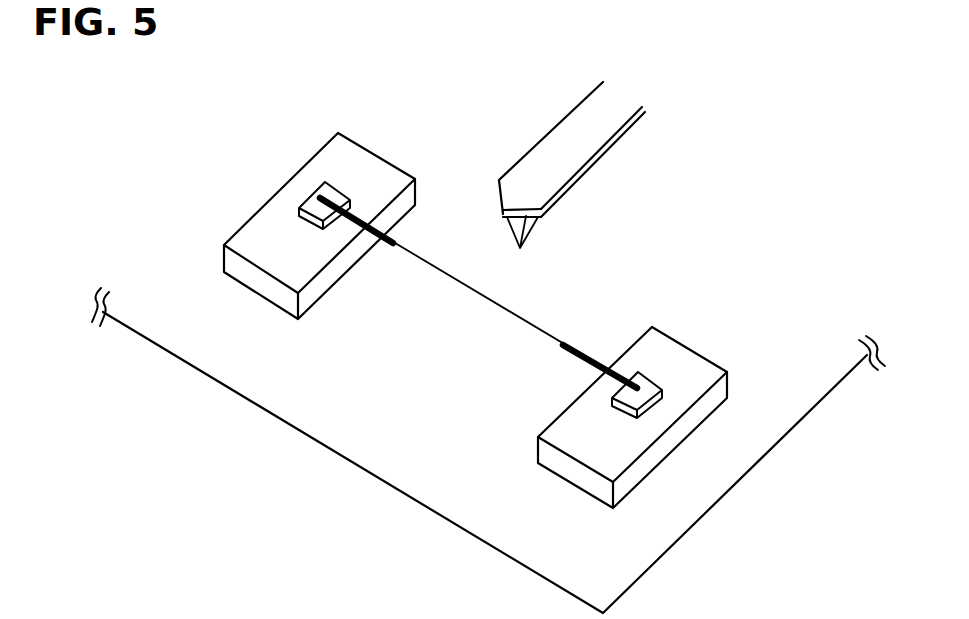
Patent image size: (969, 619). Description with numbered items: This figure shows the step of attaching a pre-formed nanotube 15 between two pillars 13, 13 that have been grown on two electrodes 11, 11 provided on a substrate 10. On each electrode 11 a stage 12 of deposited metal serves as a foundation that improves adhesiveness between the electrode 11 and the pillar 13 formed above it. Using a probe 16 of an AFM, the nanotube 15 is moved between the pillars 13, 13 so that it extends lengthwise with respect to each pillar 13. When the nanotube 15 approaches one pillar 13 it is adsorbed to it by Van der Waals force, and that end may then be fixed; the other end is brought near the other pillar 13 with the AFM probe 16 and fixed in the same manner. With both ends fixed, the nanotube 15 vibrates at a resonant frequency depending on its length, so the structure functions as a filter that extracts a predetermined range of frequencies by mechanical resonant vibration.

The substrate 10 is at (707, 485).
The structure (electrode) 11 is at (704, 381).
The stage 12 is at (333, 190).
The pillar 13 is at (383, 241).
The nanotube 15 is at (465, 280).
The probe 16 is at (532, 227).